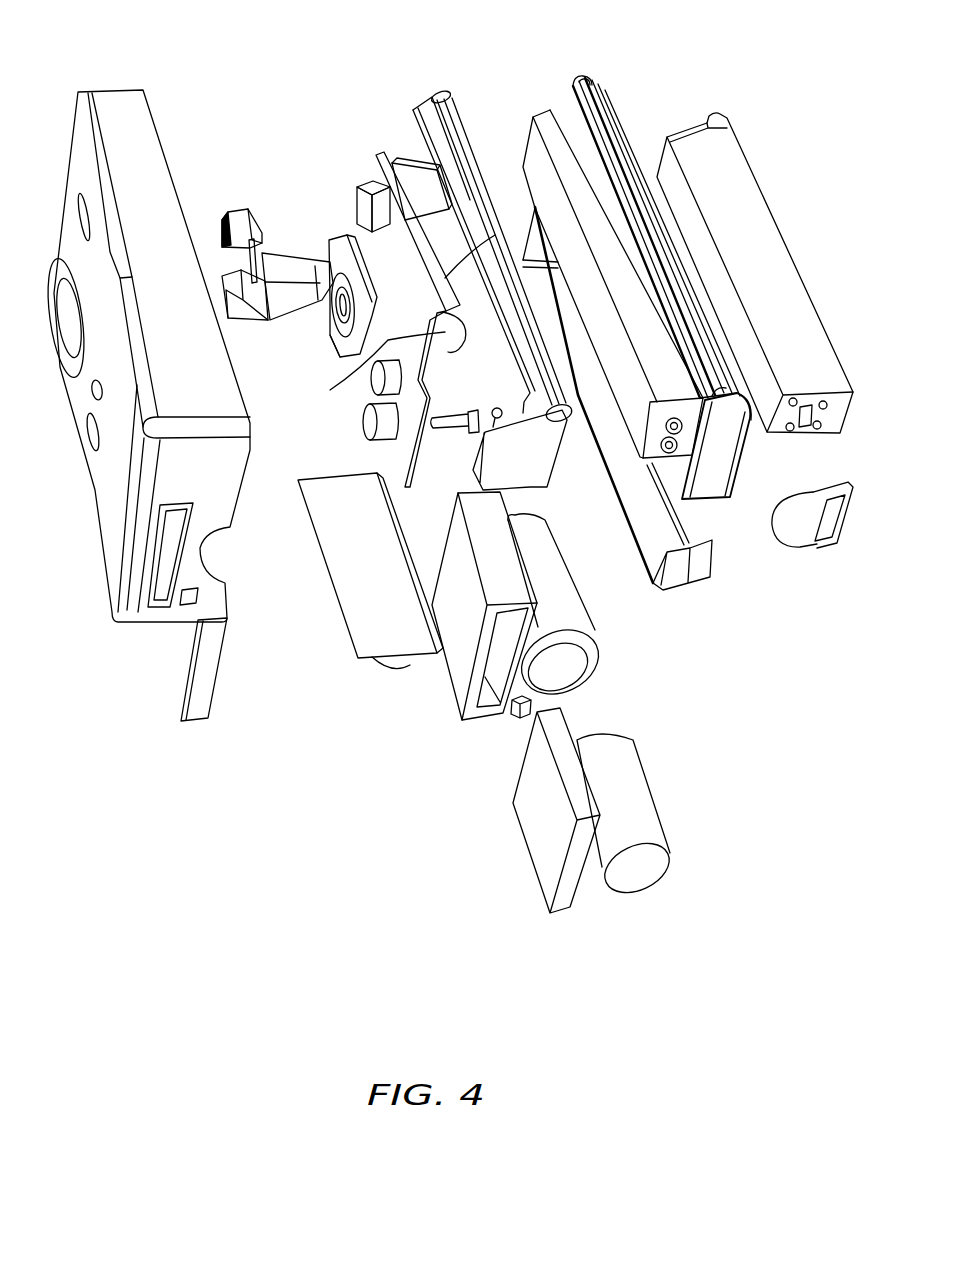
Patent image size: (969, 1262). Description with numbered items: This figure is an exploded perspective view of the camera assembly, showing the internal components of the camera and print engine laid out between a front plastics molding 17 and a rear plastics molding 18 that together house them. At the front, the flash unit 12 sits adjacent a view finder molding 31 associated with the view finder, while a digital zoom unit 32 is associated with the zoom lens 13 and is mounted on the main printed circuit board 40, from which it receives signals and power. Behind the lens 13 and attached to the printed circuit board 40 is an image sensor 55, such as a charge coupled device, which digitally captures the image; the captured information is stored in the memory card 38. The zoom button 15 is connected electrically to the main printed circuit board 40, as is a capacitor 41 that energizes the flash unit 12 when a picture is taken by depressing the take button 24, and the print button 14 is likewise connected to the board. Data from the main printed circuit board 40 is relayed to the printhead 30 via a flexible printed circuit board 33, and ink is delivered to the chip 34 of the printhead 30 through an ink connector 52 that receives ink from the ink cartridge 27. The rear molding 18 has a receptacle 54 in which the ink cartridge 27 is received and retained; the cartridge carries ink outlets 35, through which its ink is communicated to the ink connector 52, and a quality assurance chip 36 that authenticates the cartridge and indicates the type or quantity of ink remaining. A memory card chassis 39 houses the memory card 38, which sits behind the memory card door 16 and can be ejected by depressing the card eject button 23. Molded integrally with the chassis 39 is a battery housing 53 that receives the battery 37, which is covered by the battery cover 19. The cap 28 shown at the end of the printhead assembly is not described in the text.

The flash unit 12 is at (238, 216).
The zoom lens 13 is at (332, 330).
The print button 14 is at (368, 190).
The zoom button 15 is at (370, 424).
The memory card door 16 is at (200, 683).
The front plastics molding 17 is at (147, 130).
The rear plastics molding 18 is at (595, 90).
The battery cover 19 is at (806, 540).
The card eject button 23 is at (514, 718).
The take button 24 is at (382, 670).
The ink cartridge 27 is at (738, 162).
The cap 28 is at (436, 90).
The printhead 30 is at (445, 125).
The view finder molding 31 is at (308, 268).
The digital zoom unit 32 is at (336, 246).
The flexible printed circuit board 33 is at (410, 160).
The chip 34 is at (492, 110).
The ink outlets 35 is at (818, 398).
The quality assurance (QA) chip 36 is at (790, 425).
The battery 37 is at (660, 870).
The memory card 38 is at (542, 864).
The memory card chassis 39 is at (462, 705).
The main printed circuit board 40 is at (470, 212).
The capacitor 41 is at (372, 366).
The ink connector 52 is at (548, 470).
The battery housing 53 is at (582, 680).
The receptacle 54 is at (585, 170).
The image sensor 55 is at (408, 302).